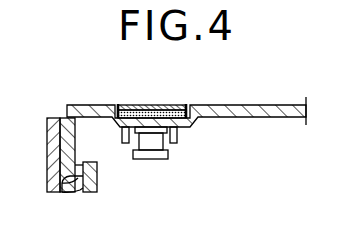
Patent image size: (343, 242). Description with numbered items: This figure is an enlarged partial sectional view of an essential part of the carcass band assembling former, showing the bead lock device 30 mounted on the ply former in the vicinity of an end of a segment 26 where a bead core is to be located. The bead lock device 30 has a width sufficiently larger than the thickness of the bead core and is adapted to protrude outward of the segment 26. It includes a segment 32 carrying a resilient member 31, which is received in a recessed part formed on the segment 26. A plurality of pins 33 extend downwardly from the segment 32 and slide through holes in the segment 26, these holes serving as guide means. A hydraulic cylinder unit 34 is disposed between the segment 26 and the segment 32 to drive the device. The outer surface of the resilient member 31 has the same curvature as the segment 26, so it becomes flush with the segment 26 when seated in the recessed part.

The segment 26 is at (249, 117).
The bead lock device 30 is at (149, 82).
The resilient member 31 is at (160, 110).
The segment 32 is at (128, 107).
The pins 33 is at (180, 133).
The hydraulic cylinder unit 34 is at (168, 158).